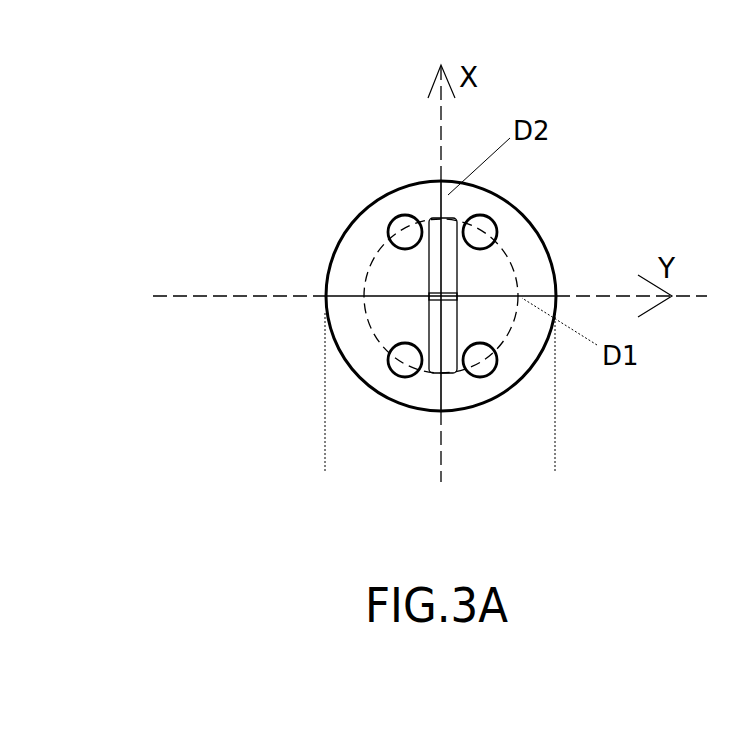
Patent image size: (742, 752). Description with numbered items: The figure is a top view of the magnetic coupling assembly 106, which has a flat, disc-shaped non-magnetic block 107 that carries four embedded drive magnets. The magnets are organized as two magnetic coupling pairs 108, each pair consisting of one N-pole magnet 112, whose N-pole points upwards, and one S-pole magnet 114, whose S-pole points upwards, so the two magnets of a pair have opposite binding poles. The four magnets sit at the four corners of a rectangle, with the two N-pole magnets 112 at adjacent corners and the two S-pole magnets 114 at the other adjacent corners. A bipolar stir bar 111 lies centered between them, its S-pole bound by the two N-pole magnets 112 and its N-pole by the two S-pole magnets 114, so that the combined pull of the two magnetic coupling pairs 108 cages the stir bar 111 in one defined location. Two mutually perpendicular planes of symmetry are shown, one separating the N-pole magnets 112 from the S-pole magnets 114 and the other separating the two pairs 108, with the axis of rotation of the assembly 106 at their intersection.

The magnetic coupling assembly 106 is at (555, 267).
The non-magnetic block 107 is at (417, 197).
The magnetic coupling pair 108 is at (260, 237).
The bipolar stir bar 111 is at (428, 252).
The N-pole magnet 112 is at (393, 218).
The S-pole magnet 114 is at (390, 373).